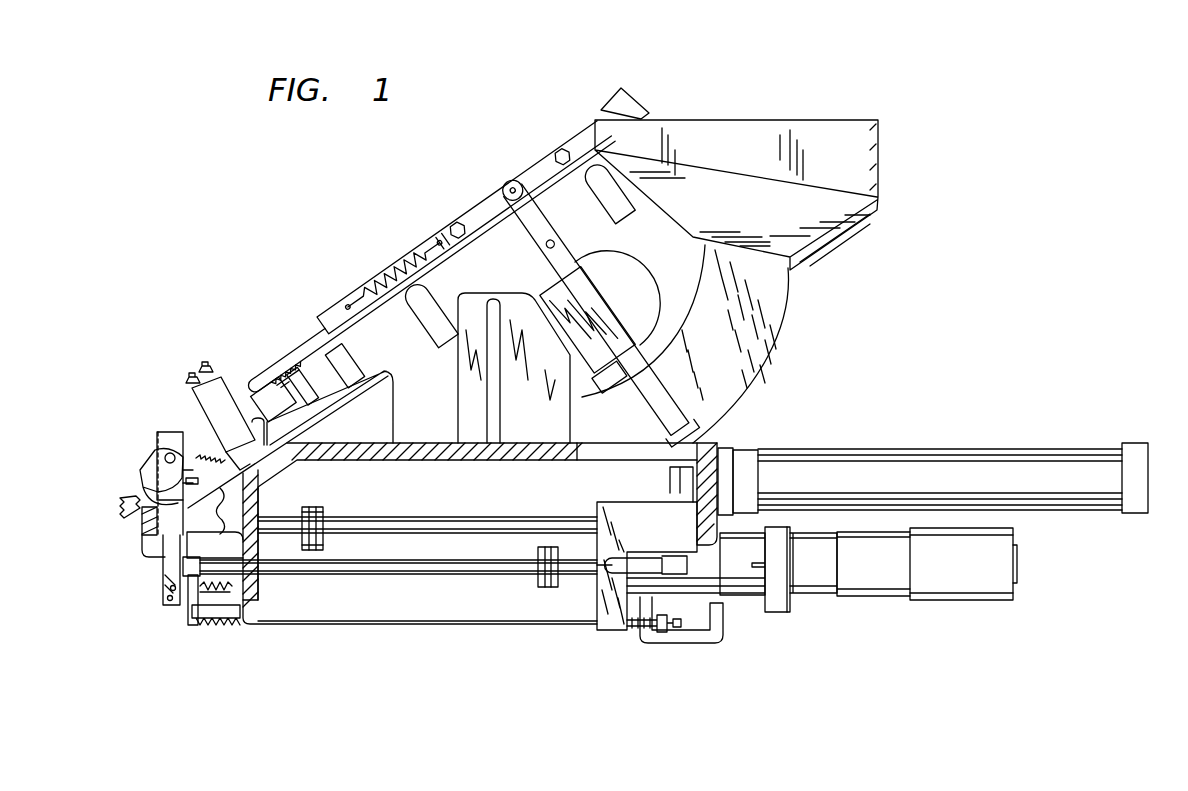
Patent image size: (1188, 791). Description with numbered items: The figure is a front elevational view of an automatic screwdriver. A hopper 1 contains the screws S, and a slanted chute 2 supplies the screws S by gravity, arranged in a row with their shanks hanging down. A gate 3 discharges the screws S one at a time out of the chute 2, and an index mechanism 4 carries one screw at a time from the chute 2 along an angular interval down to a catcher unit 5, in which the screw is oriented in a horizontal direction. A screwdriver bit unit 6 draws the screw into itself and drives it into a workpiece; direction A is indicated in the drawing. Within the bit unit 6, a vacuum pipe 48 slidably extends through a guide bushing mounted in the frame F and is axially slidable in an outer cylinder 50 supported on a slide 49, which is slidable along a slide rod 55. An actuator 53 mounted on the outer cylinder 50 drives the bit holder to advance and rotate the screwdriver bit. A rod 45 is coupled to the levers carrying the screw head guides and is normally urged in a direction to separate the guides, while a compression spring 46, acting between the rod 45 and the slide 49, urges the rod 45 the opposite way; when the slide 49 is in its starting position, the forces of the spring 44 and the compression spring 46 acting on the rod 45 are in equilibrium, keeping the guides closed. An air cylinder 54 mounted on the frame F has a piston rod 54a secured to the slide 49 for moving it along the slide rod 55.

The hopper 1 is at (750, 104).
The slanted chute 2 is at (468, 184).
The gate 3 is at (269, 353).
The index mechanism 4 is at (136, 414).
The catcher unit 5 is at (163, 620).
The screwdriver bit unit 6 is at (306, 600).
The spring 44 is at (221, 620).
The rod 45 is at (520, 626).
The compression spring 46 is at (636, 631).
The vacuum pipe 48 is at (408, 563).
The slide 49 is at (607, 633).
The outer cylinder 50 is at (738, 588).
The actuator 53 is at (962, 577).
The air cylinder 54 is at (1062, 484).
The piston rod 54a is at (668, 486).
The slide rod 55 is at (474, 520).
The frame F is at (407, 451).
The screws S is at (314, 346).
The direction arrow A is at (143, 278).